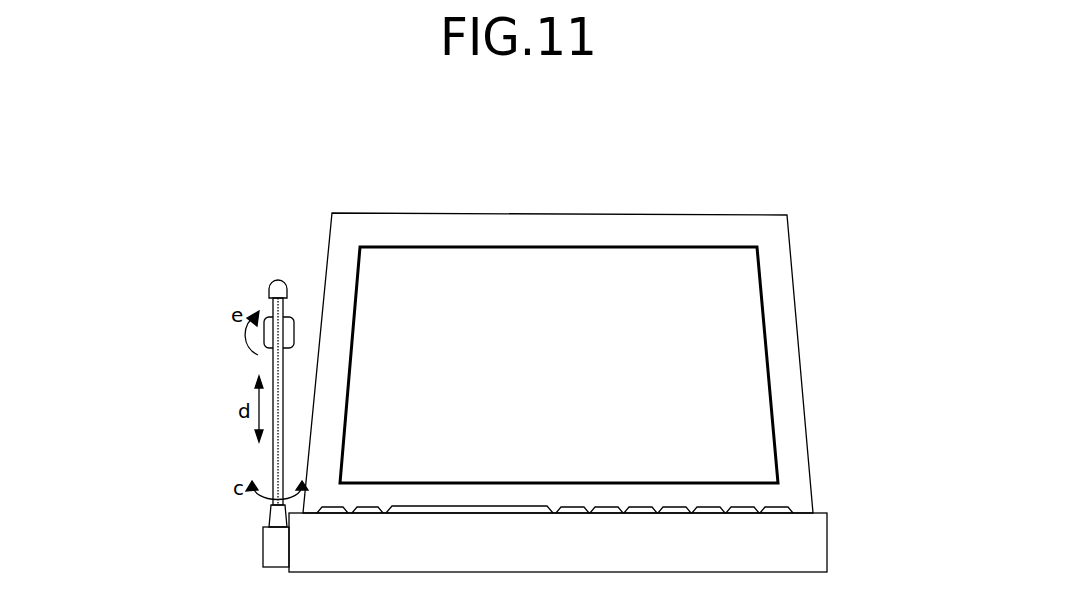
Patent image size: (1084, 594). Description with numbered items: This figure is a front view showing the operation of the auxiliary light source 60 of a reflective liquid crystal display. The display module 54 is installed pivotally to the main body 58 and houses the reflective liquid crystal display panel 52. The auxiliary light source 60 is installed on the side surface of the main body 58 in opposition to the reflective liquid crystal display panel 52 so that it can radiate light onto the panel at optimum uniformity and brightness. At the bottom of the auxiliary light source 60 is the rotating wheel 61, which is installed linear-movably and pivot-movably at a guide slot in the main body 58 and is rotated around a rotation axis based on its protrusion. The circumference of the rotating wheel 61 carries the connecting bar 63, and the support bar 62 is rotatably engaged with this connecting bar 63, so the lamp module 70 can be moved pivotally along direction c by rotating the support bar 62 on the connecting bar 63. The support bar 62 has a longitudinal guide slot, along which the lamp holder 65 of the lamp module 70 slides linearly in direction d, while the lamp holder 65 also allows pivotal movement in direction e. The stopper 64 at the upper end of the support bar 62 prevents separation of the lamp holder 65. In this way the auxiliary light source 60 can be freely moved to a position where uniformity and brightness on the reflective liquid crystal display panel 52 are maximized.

The reflective liquid crystal display panel 52 is at (598, 246).
The display module 54 is at (699, 214).
The main body 58 is at (822, 550).
The auxiliary light source 60 is at (238, 377).
The rotating wheel 61 is at (263, 557).
The support bar 62 is at (273, 465).
The connecting bar 63 is at (269, 517).
The stopper 64 is at (273, 289).
The lamp holder 65 is at (264, 320).
The lamp module 70 is at (228, 337).